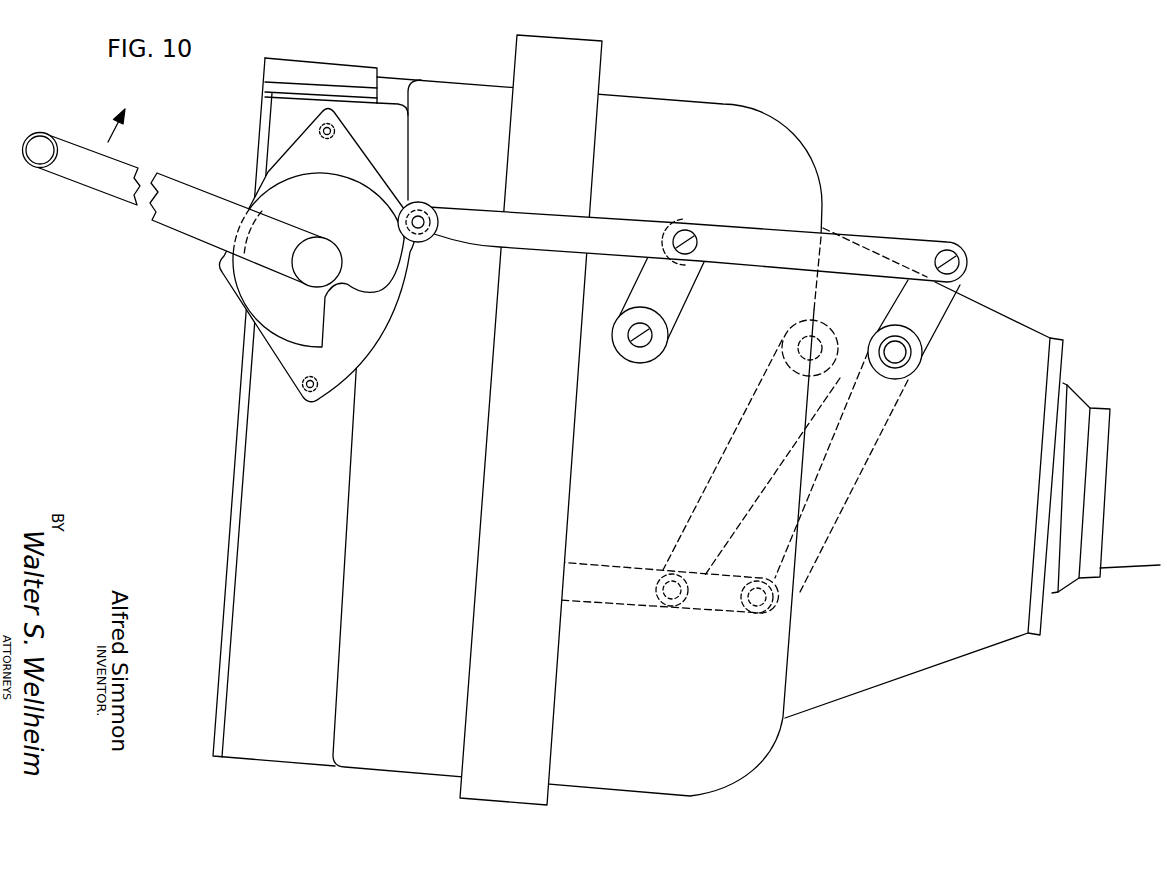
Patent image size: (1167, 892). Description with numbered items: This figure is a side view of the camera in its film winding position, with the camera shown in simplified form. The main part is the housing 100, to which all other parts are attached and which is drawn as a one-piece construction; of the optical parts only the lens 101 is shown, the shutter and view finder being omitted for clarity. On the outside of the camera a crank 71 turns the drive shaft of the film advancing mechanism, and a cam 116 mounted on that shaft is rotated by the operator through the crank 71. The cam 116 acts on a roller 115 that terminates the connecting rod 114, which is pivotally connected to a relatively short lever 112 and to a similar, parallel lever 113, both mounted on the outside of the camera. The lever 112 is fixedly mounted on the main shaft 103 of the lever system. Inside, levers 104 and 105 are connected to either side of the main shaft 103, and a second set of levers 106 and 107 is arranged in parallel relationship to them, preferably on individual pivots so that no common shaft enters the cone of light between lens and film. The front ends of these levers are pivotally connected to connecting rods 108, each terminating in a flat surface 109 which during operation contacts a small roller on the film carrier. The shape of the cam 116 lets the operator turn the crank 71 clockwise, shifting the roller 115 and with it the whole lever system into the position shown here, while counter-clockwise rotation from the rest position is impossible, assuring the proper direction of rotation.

The crank 71 is at (67, 181).
The housing 100 is at (809, 161).
The lens 101 is at (1113, 408).
The main shaft 103 is at (911, 353).
The lever 104 is at (861, 464).
The lever 105 is at (835, 496).
The lever 106 is at (748, 422).
The lever 107 is at (748, 492).
The connecting rod 108 is at (634, 598).
The flat surface 109 is at (513, 570).
The lever 112 is at (937, 316).
The lever 113 is at (690, 292).
The connecting rod 114 is at (748, 228).
The roller 115 is at (430, 206).
The cam 116 is at (407, 272).